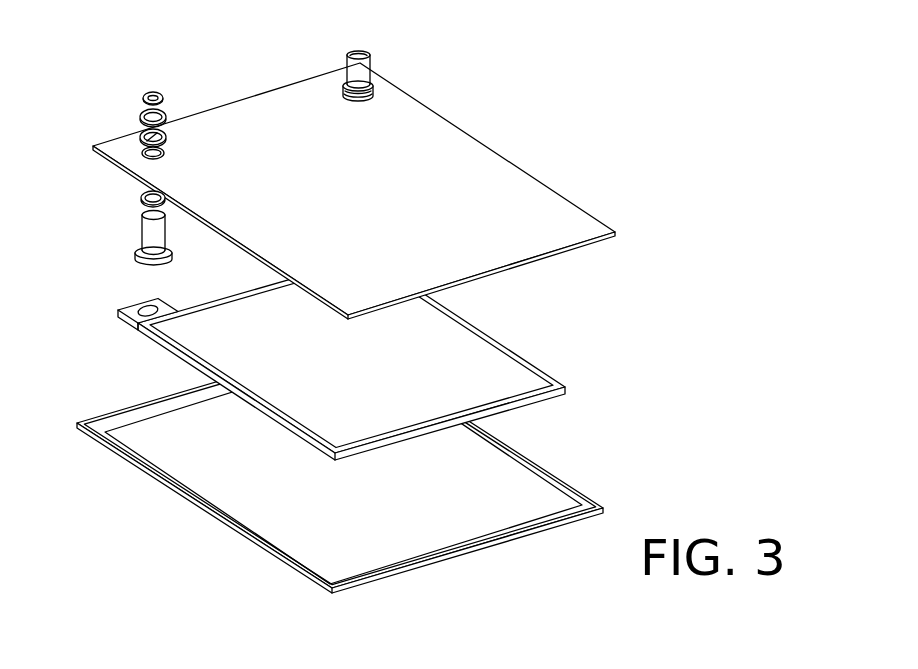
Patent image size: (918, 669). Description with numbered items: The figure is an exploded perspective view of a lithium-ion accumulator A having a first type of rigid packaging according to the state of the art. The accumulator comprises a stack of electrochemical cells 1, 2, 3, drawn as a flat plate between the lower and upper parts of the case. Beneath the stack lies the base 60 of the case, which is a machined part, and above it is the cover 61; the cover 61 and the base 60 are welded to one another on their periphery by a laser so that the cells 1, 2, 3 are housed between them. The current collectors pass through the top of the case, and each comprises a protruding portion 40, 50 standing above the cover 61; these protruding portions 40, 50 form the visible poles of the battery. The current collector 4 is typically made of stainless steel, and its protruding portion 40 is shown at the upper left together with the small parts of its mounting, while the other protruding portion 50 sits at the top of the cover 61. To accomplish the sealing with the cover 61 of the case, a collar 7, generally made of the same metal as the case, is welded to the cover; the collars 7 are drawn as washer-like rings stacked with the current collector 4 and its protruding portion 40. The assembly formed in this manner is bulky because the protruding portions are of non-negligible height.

The lithium-ion accumulator A is at (361, 310).
The base 60 is at (535, 503).
The electrochemical cell 1 is at (399, 358).
The electrochemical cell 2 is at (399, 358).
The electrochemical cell 3 is at (525, 382).
The cover 61 is at (578, 228).
The current collector 4 is at (94, 208).
The collar 7 is at (145, 128).
The protruding portion 40 is at (116, 224).
The protruding portion 50 is at (362, 75).